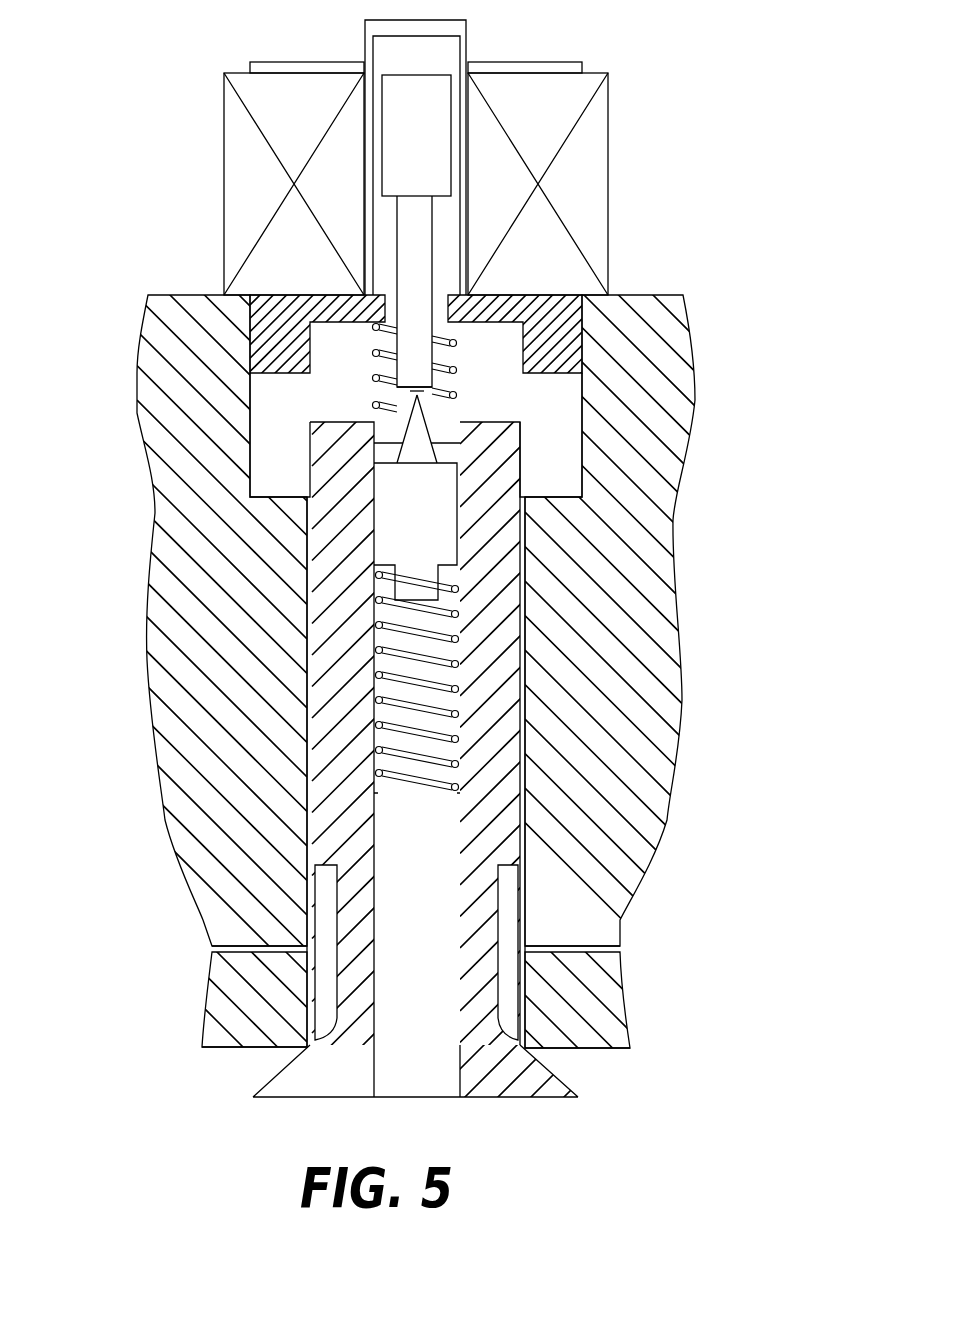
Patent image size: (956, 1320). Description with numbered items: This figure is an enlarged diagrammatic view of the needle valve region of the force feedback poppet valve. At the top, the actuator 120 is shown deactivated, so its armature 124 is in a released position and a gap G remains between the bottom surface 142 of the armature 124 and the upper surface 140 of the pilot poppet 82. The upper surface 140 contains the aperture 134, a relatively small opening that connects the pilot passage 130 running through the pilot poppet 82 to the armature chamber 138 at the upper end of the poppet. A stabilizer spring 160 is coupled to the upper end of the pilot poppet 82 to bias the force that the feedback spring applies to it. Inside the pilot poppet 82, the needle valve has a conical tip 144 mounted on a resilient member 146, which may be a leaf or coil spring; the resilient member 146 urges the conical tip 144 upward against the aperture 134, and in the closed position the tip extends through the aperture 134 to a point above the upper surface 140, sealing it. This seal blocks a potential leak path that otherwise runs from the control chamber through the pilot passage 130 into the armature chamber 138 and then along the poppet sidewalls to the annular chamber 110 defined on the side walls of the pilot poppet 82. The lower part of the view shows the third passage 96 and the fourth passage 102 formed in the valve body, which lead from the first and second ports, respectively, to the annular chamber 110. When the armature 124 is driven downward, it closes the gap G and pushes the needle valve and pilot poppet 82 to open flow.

The actuator 120 is at (433, 72).
The armature 124 is at (432, 245).
The conical tip 144 is at (430, 397).
The stabilizer spring 160 is at (480, 357).
The bottom surface 142 is at (457, 387).
The upper surface 140 is at (513, 412).
The gap G is at (425, 395).
The aperture 134 is at (400, 418).
The armature chamber 138 is at (533, 482).
The pilot poppet 82 is at (416, 546).
The resilient member 146 is at (460, 706).
The pilot passage 130 is at (450, 750).
The third passage 96 is at (213, 921).
The annular chamber 110 is at (515, 928).
The fourth passage 102 is at (598, 948).